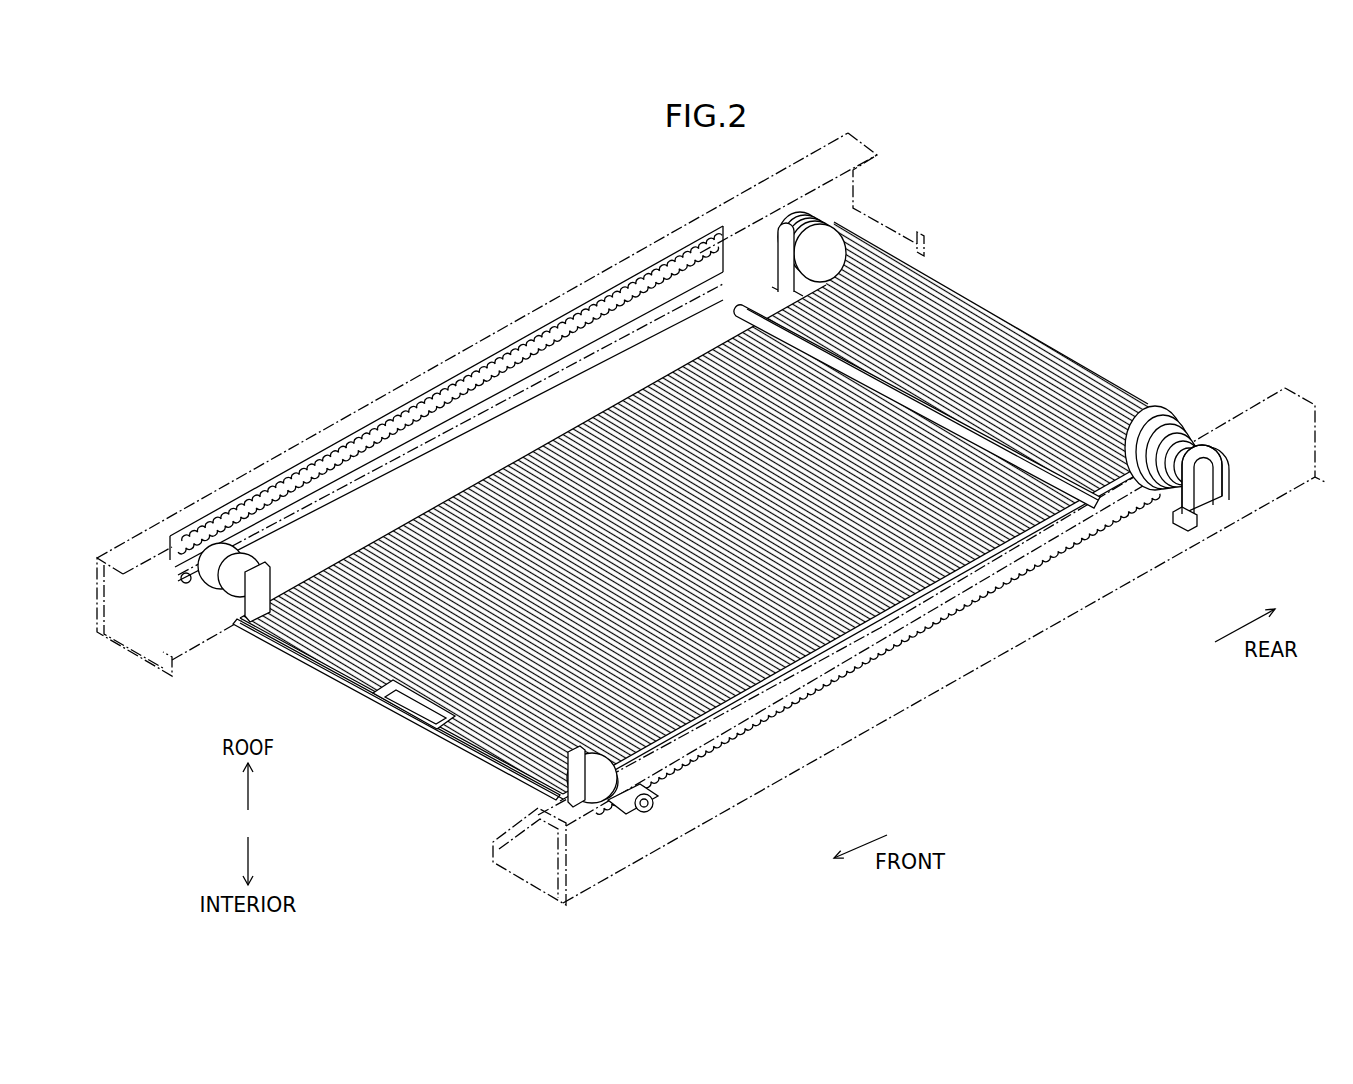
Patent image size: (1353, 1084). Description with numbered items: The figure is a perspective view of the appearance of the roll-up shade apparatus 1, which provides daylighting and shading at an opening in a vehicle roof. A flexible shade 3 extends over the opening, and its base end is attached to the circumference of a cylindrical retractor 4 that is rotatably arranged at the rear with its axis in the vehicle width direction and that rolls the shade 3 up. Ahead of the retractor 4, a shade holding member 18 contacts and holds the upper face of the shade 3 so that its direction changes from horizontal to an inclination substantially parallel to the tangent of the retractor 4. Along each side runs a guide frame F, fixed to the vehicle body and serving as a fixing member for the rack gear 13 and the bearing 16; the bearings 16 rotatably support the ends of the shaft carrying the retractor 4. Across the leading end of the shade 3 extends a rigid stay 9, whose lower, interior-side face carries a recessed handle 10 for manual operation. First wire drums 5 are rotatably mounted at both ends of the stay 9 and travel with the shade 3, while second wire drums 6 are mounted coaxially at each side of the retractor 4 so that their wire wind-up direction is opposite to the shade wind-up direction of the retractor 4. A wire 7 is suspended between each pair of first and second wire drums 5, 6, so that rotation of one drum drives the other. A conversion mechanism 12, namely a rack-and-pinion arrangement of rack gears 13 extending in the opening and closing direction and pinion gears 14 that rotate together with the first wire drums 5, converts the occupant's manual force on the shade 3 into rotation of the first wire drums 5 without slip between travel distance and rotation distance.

The roll-up shade apparatus 1 is at (408, 290).
The shade 3 is at (937, 548).
The retractor 4 is at (1190, 420).
The first wire drum 5 is at (215, 578).
The second wire drum 6 is at (1215, 446).
The wire 7 is at (525, 400).
The stay 9 is at (318, 672).
The handle 10 is at (404, 725).
The conversion mechanism 12 is at (642, 577).
The rack gear 13 is at (252, 504).
The pinion gear 14 is at (409, 693).
The bearing 16 is at (775, 215).
The shade holding member 18 is at (767, 290).
The guide frame F is at (123, 655).